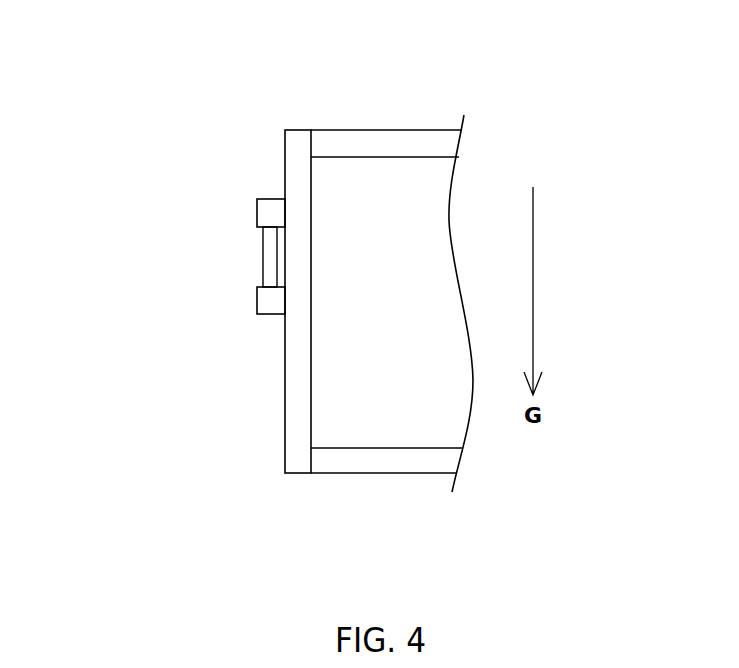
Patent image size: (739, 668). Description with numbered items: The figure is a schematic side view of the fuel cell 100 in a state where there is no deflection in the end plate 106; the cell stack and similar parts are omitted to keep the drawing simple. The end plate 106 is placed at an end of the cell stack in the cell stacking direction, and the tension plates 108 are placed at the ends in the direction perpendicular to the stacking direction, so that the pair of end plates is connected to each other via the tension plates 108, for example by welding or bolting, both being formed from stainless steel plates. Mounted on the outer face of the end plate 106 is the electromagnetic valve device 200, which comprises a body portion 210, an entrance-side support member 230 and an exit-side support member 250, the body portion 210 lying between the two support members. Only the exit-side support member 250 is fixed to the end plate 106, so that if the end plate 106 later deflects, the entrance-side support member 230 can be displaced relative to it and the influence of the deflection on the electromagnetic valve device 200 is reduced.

The fuel cell 100 is at (306, 313).
The end plate 106 is at (293, 427).
The tension plate 108 is at (382, 142).
The electromagnetic valve device 200 is at (212, 198).
The body portion 210 is at (268, 258).
The entrance-side support member 230 is at (268, 213).
The exit-side support member 250 is at (265, 300).